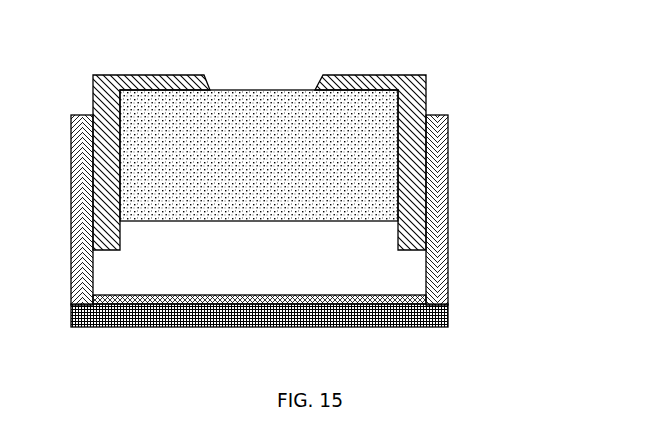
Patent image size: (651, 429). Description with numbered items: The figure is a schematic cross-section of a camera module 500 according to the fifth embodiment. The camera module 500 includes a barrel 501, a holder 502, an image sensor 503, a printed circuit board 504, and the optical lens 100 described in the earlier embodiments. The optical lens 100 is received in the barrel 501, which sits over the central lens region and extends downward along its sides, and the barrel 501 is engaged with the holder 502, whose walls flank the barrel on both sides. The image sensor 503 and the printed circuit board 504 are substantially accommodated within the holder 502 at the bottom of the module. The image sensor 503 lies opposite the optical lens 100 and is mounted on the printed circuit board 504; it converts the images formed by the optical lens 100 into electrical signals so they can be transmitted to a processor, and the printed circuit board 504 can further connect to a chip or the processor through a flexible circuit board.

The camera module 500 is at (126, 57).
The optical lens 100 is at (267, 112).
The barrel 501 is at (428, 87).
The holder 502 is at (448, 181).
The image sensor 503 is at (305, 296).
The printed circuit board 504 is at (236, 326).